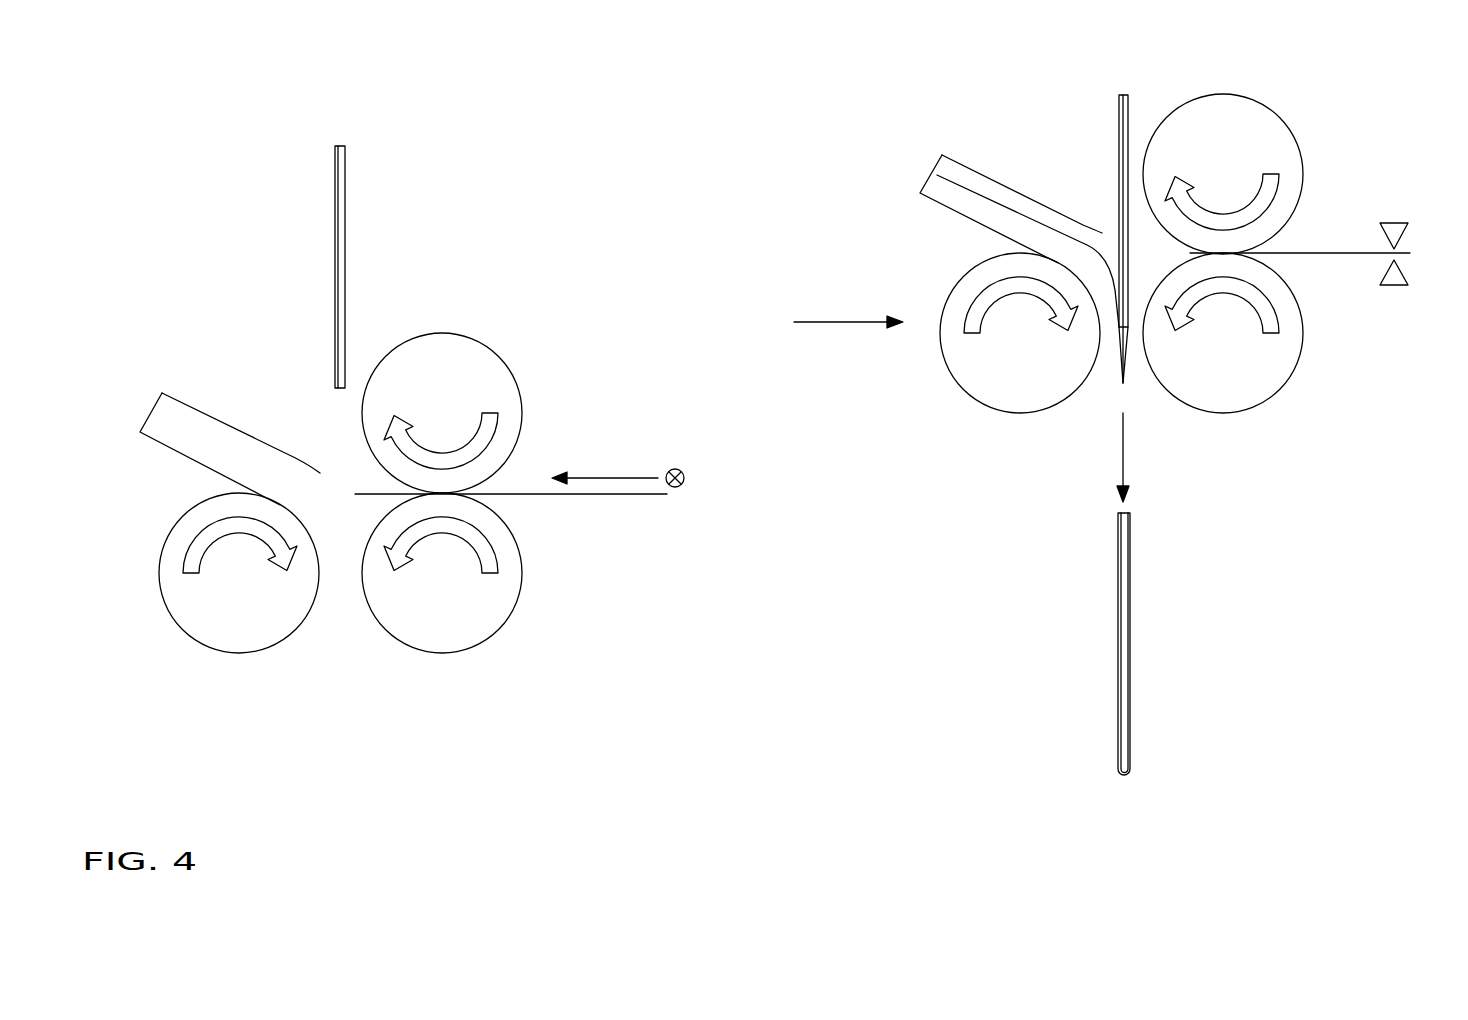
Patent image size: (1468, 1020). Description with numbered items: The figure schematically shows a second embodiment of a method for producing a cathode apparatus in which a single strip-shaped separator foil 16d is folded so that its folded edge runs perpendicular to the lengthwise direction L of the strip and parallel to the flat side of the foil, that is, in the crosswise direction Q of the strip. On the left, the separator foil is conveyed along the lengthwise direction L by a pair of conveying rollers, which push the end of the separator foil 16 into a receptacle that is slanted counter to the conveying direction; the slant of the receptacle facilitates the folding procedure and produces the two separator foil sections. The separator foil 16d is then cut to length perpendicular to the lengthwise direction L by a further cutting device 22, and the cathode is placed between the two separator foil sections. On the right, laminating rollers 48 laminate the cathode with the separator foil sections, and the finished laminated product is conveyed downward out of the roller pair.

The separator foil 16 is at (1150, 665).
The strip-shaped separator foil 16d is at (604, 494).
The cutting device 22 is at (1393, 223).
The laminating rollers 48 is at (213, 648).
The lengthwise direction of the strip L is at (615, 478).
The crosswise direction of the strip Q is at (676, 476).